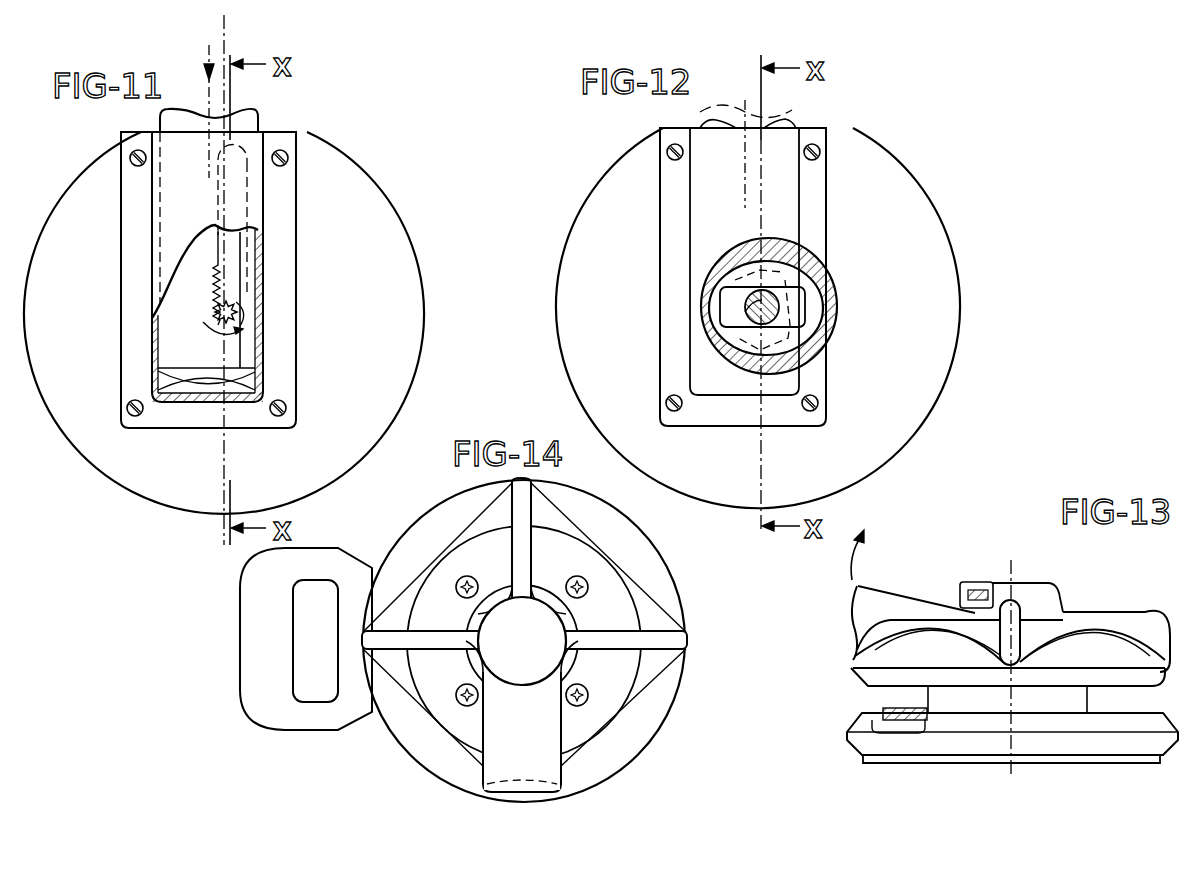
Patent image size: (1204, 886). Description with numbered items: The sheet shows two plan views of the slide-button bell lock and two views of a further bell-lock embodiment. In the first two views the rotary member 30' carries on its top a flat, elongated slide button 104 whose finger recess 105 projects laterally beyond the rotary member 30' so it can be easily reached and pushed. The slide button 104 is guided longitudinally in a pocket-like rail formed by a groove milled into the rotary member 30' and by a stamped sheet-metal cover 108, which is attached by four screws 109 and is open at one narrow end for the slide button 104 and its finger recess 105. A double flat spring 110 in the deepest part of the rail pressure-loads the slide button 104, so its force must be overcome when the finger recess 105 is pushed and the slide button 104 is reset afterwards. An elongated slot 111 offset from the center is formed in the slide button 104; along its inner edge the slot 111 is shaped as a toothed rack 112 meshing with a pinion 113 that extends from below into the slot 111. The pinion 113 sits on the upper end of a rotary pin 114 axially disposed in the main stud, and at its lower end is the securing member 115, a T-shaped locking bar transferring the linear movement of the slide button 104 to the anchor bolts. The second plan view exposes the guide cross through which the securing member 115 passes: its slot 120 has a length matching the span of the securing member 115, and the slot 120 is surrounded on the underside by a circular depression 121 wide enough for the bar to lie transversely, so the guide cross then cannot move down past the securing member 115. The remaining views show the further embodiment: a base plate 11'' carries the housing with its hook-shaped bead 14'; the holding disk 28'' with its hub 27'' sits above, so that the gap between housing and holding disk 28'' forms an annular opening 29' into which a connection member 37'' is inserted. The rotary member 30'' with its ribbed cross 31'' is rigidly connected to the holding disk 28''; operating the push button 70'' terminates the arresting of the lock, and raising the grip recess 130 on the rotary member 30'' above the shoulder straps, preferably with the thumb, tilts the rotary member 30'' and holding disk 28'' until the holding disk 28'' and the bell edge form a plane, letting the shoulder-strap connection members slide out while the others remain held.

In FIG. 11, the rotary member 30' is at (224, 323).
In FIG. 12, the rotary member 30' is at (757, 318).
In FIG. 11, the slide button 104 is at (172, 343).
In FIG. 12, the slide button 104 is at (704, 283).
In FIG. 11, the finger recess 105 is at (190, 93).
In FIG. 12, the finger recess 105 is at (788, 123).
In FIG. 11, the sheet-metal cover 108 is at (152, 187).
In FIG. 12, the sheet-metal cover 108 is at (697, 233).
In FIG. 11, the screws 109 is at (285, 150).
In FIG. 12, the screws 109 is at (669, 151).
In FIG. 11, the double flat spring 110 is at (200, 382).
In FIG. 11, the elongated slot 111 is at (240, 254).
In FIG. 11, the toothed rack 112 is at (225, 286).
In FIG. 11, the pinion 113 is at (232, 313).
In FIG. 12, the rotary pin 114 is at (746, 312).
In FIG. 12, the securing member 115 is at (792, 314).
In FIG. 12, the slot 120 is at (805, 293).
In FIG. 12, the circular depression 121 is at (780, 277).
In FIG. 14, the connection member 37'' is at (282, 639).
In FIG. 14, the rotary member 30'' is at (524, 641).
In FIG. 13, the rotary member 30'' is at (972, 604).
In FIG. 14, the holding disk 28'' is at (549, 635).
In FIG. 13, the holding disk 28'' is at (980, 655).
In FIG. 14, the ribbed cross 31'' is at (524, 627).
In FIG. 13, the ribbed cross 31'' is at (1116, 620).
In FIG. 14, the push button 70'' is at (550, 641).
In FIG. 13, the push button 70'' is at (1018, 576).
In FIG. 14, the grip recess 130 is at (550, 788).
In FIG. 13, the grip recess 130 is at (864, 605).
In FIG. 13, the hub 27'' is at (1008, 675).
In FIG. 13, the annular opening 29' is at (1066, 699).
In FIG. 13, the bead 14' is at (1038, 721).
In FIG. 13, the base plate 11'' is at (1025, 750).